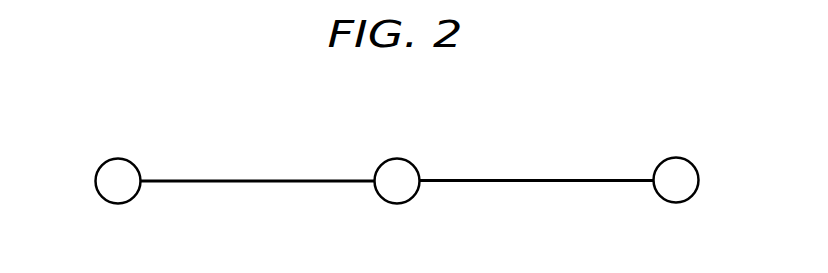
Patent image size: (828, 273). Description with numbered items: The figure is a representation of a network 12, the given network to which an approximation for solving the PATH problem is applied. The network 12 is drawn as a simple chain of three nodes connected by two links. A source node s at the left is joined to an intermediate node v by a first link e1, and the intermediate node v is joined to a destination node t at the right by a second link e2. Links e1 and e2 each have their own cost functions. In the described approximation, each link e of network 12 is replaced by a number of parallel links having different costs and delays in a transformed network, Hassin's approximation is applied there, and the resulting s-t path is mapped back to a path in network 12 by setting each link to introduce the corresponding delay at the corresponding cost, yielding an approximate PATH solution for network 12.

The network 12 is at (388, 125).
The source node s is at (118, 181).
The intermediate node v is at (397, 181).
The destination node t is at (676, 180).
The link e1 is at (257, 166).
The link e2 is at (536, 166).